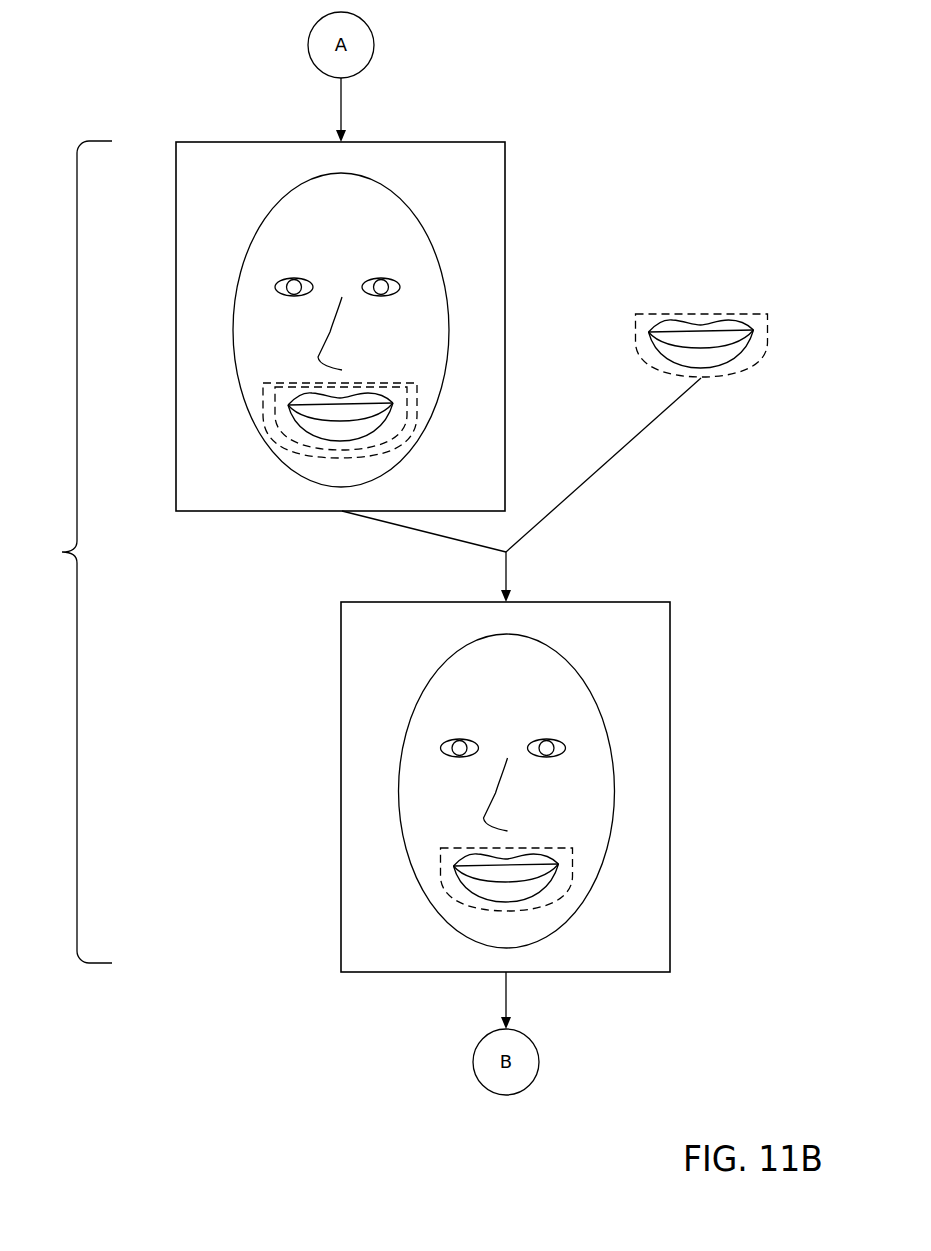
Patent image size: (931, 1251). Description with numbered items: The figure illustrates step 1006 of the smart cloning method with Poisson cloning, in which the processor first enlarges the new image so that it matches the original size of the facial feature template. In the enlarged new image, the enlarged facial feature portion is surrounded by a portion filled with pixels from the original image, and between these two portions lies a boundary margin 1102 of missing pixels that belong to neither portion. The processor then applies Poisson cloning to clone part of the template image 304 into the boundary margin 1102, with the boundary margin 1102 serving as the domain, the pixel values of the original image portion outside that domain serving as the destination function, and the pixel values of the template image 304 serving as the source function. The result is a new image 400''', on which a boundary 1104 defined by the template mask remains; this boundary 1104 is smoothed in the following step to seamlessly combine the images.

The boundary margin 1102 is at (415, 403).
The template image 304 is at (720, 325).
The step 1006 is at (63, 552).
The new image 400''' is at (562, 787).
The boundary 1104 is at (574, 863).